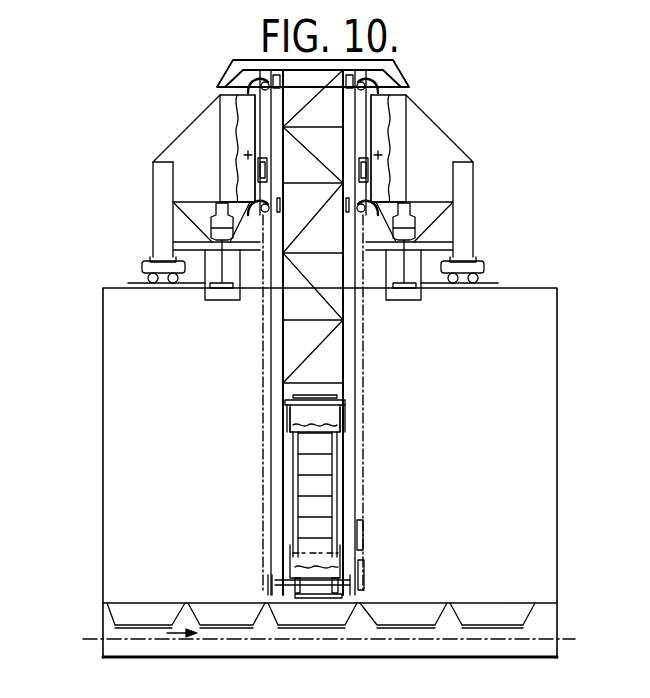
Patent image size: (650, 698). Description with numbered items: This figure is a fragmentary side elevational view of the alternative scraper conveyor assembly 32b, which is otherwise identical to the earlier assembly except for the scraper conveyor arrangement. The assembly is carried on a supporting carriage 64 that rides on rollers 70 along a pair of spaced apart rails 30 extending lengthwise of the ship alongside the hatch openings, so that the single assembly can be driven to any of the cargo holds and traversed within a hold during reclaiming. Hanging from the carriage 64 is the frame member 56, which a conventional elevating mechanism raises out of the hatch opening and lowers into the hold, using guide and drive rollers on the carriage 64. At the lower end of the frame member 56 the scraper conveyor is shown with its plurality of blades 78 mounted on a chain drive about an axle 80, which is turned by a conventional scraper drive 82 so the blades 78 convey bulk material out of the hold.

The rails 30 is at (490, 284).
The scraper conveyor assembly 32b is at (121, 358).
The frame member 56 is at (265, 349).
The supporting carriage 64 is at (460, 133).
The rollers 70 is at (178, 286).
The blades 78 is at (320, 447).
The axle 80 is at (323, 584).
The scraper drive 82 is at (262, 583).